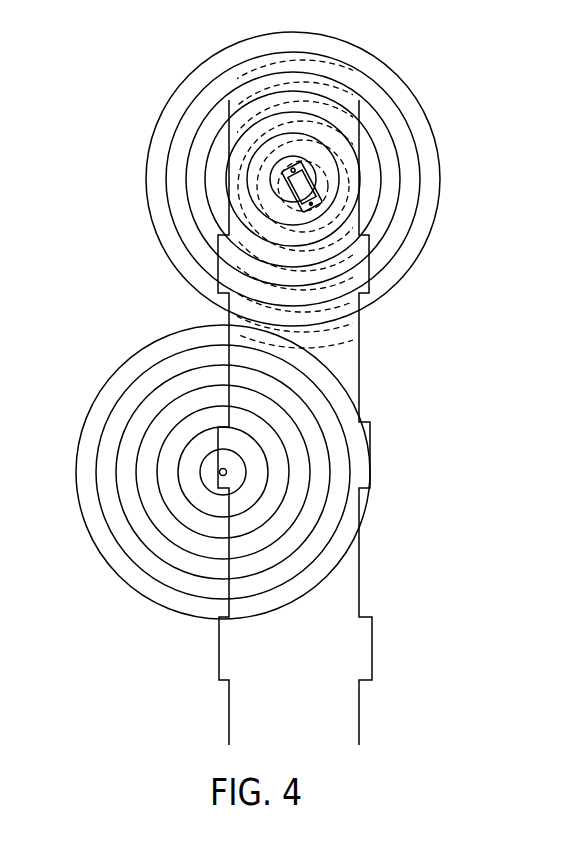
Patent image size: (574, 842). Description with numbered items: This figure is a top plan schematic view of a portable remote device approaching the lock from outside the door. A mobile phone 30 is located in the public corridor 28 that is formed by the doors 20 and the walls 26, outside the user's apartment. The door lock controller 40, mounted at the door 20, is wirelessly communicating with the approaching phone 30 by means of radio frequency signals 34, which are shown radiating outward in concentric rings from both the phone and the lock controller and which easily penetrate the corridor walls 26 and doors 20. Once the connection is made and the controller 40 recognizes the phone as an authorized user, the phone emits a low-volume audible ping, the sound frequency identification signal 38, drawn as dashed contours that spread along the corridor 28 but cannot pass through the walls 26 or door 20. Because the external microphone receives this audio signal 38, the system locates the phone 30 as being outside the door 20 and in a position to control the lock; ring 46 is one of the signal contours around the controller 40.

The door 20 is at (207, 457).
The walls 26 is at (232, 725).
The corridor 28 is at (353, 602).
The mobile phone 30 is at (317, 190).
The radio frequency signals 34 is at (383, 118).
The sound frequency identification signal 38 is at (362, 337).
The lock controller 40 is at (228, 472).
The signal ring 46 is at (133, 468).